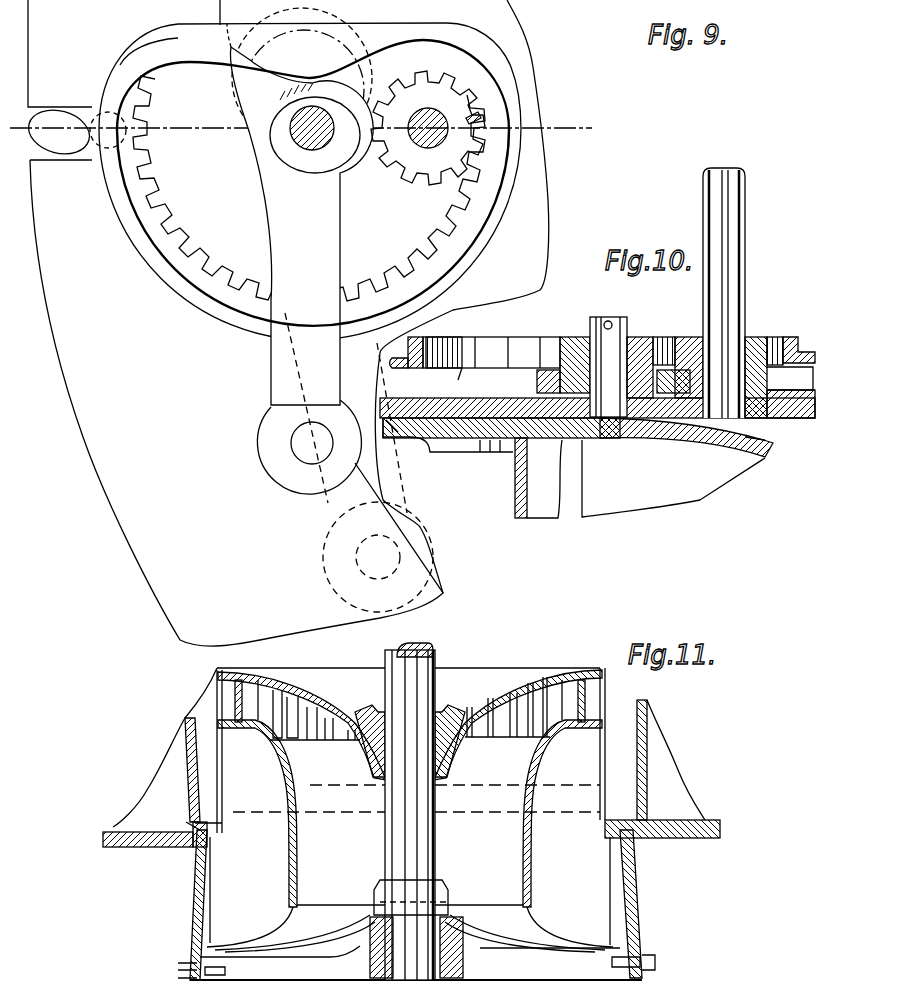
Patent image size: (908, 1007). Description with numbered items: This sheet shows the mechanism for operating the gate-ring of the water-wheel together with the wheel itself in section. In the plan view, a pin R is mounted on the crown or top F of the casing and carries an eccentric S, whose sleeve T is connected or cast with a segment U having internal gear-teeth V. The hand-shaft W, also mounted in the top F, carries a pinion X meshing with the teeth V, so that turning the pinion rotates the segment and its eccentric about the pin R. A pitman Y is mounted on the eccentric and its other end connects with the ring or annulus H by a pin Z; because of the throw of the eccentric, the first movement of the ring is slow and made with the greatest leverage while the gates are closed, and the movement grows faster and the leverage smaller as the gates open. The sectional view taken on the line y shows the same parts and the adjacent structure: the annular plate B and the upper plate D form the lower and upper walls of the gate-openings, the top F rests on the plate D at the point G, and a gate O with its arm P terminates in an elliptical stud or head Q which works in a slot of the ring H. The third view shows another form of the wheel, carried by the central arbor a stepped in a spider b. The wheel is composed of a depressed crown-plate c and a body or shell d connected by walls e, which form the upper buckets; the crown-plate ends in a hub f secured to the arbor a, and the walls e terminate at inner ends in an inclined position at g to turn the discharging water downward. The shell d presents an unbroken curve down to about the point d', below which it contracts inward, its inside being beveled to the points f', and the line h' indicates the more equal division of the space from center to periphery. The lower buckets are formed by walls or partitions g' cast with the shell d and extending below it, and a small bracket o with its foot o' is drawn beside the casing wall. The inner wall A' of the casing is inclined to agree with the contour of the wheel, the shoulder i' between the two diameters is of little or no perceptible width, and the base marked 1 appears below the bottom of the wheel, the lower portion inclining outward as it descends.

In FIG. 9, the segment U is at (122, 50).
In FIG. 10, the segment U is at (412, 368).
In FIG. 9, the pitman Y is at (228, 92).
In FIG. 10, the pitman Y is at (537, 378).
In FIG. 9, the stud or head Q is at (75, 132).
In FIG. 10, the stud or head Q is at (399, 416).
In FIG. 9, the section line y is at (308, 132).
In FIG. 9, the internal gear-teeth V is at (158, 183).
In FIG. 10, the internal gear-teeth V is at (446, 368).
In FIG. 9, the sleeve T is at (262, 147).
In FIG. 10, the sleeve T is at (560, 345).
In FIG. 9, the pin R is at (320, 122).
In FIG. 10, the pin R is at (610, 318).
In FIG. 9, the hand-shaft W is at (428, 128).
In FIG. 10, the hand-shaft W is at (748, 330).
In FIG. 9, the pinion X is at (470, 120).
In FIG. 10, the pinion X is at (766, 342).
In FIG. 9, the crown or top F is at (324, 296).
In FIG. 10, the crown or top F is at (791, 394).
In FIG. 9, the pin Z is at (309, 447).
In FIG. 9, the ring or annulus H is at (236, 403).
In FIG. 10, the ring or annulus H is at (464, 383).
In FIG. 10, the eccentric S is at (491, 352).
In FIG. 10, the gate arm P is at (597, 440).
In FIG. 10, the upper plate D is at (430, 440).
In FIG. 10, the resting-point G is at (562, 425).
In FIG. 10, the walls e is at (673, 478).
In FIG. 11, the walls e is at (410, 725).
In FIG. 10, the crown-plate c is at (755, 428).
In FIG. 11, the crown-plate c is at (410, 725).
In FIG. 10, the gates O is at (515, 478).
In FIG. 11, the gates O is at (186, 785).
In FIG. 11, the inclined termination of the walls g is at (410, 813).
In FIG. 11, the hub f is at (410, 729).
In FIG. 11, the body or shell d is at (429, 867).
In FIG. 11, the point where the curve terminates d' is at (455, 776).
In FIG. 11, the dividing line h' is at (416, 806).
In FIG. 11, the bracket foot o' is at (392, 810).
In FIG. 11, the bracket wall o is at (671, 760).
In FIG. 11, the annular plate B is at (734, 826).
In FIG. 11, the inner wall A' is at (418, 905).
In FIG. 11, the spider b is at (416, 967).
In FIG. 11, the shoulder or jog i' is at (410, 889).
In FIG. 11, the walls or partitions g' is at (410, 924).
In FIG. 11, the central shaft or arbor a is at (436, 656).
In FIG. 11, the bevel points f' is at (438, 890).
In FIG. 11, the base 1 is at (334, 982).